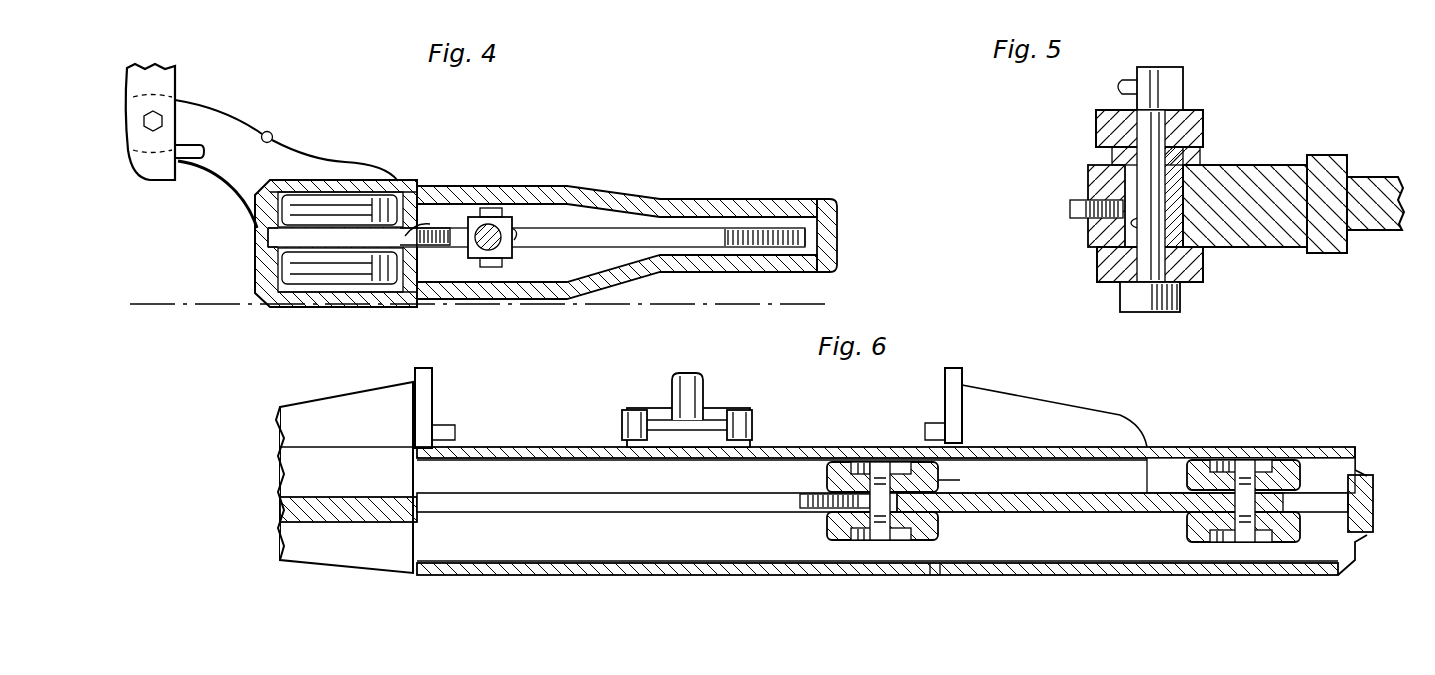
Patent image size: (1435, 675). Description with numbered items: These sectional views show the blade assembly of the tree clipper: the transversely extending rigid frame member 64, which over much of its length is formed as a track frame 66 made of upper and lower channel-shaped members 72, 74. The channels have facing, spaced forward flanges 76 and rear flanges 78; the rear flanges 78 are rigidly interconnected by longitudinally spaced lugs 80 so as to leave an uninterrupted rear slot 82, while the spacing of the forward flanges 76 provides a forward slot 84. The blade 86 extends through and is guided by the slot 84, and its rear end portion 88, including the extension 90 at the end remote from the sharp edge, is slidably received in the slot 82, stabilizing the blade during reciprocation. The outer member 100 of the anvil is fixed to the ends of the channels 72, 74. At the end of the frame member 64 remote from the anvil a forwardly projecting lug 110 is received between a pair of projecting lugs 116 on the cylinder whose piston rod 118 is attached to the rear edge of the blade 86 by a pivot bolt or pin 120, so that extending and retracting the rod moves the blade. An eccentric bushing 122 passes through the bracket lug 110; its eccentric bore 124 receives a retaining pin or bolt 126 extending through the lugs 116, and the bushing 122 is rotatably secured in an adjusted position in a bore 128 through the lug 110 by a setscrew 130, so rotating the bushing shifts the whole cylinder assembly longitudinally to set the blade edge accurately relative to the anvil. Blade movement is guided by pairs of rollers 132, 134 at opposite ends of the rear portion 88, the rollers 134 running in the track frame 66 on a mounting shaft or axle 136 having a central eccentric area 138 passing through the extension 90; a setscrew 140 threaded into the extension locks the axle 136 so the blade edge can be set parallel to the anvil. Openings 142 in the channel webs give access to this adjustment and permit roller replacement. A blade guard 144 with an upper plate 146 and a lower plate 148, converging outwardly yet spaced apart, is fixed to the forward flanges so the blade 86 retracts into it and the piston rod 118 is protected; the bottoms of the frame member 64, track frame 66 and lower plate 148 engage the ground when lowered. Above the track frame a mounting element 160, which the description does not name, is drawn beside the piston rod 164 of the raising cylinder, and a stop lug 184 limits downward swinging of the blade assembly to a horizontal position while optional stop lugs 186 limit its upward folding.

In FIG. 5, the transversely extending rigid frame member 64 is at (1378, 179).
In FIG. 6, the transversely extending rigid frame member 64 is at (285, 485).
In FIG. 6, the track frame 66 is at (1183, 438).
In FIG. 4, the upper channel-shaped member 72 is at (323, 181).
In FIG. 6, the upper channel-shaped member 72 is at (773, 452).
In FIG. 4, the lower channel-shaped member 74 is at (353, 301).
In FIG. 6, the lower channel-shaped member 74 is at (670, 566).
In FIG. 4, the forward flanges 76 is at (430, 231).
In FIG. 4, the rear flanges 78 is at (272, 270).
In FIG. 6, the rear flanges 78 is at (1050, 470).
In FIG. 4, the lugs 80 is at (255, 220).
In FIG. 4, the rear slot 82 is at (265, 238).
In FIG. 6, the rear slot 82 is at (552, 497).
In FIG. 4, the forward slot 84 is at (437, 222).
In FIG. 4, the blade 86 is at (590, 235).
In FIG. 4, the rear end portion of the blade 88 is at (273, 294).
In FIG. 6, the rear end portion of the blade 88 is at (1087, 504).
In FIG. 6, the extension 90 is at (923, 503).
In FIG. 6, the outer member 100 is at (1368, 493).
In FIG. 5, the bracket lug 110 is at (1243, 178).
In FIG. 5, the projecting lugs 116 is at (1188, 130).
In FIG. 4, the piston rod 118 is at (514, 238).
In FIG. 4, the pivot bolt or pin 120 is at (500, 268).
In FIG. 5, the eccentric bushing 122 is at (1172, 190).
In FIG. 5, the eccentric bore 124 is at (1140, 225).
In FIG. 5, the retaining pin or bolt 126 is at (1170, 312).
In FIG. 5, the bore 128 is at (1238, 248).
In FIG. 5, the setscrew 130 is at (1072, 215).
In FIG. 6, the rollers 132 is at (1290, 467).
In FIG. 4, the rollers 134 is at (352, 208).
In FIG. 6, the rollers 134 is at (840, 463).
In FIG. 6, the mounting shaft or axle 136 is at (867, 542).
In FIG. 6, the central eccentric area 138 is at (912, 470).
In FIG. 6, the setscrew 140 is at (807, 497).
In FIG. 6, the openings 142 is at (928, 562).
In FIG. 4, the blade guard 144 is at (760, 192).
In FIG. 4, the upper plate 146 is at (549, 197).
In FIG. 4, the lower plate 148 is at (557, 287).
In FIG. 6, the bracket 160 is at (732, 407).
In FIG. 6, the piston rod 164 is at (687, 392).
In FIG. 4, the stop lug 184 is at (202, 146).
In FIG. 4, the stop lugs 186 is at (275, 136).